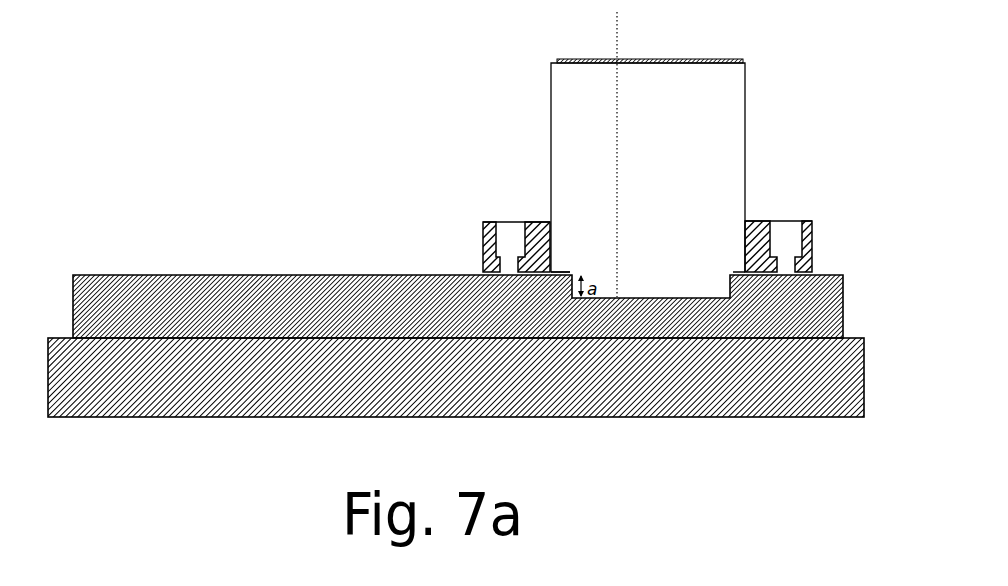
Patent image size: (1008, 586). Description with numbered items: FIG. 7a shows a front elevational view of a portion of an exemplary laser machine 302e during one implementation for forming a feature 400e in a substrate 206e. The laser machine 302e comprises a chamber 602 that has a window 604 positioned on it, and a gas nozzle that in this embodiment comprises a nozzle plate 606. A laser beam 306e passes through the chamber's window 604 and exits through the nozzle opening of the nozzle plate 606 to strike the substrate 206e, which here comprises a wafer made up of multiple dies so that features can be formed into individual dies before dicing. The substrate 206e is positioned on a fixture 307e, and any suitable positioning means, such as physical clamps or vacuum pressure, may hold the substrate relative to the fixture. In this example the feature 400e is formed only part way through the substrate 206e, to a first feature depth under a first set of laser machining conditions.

The laser machine 302e is at (380, 126).
The laser beam 306e is at (620, 41).
The window 604 is at (577, 57).
The chamber 602 is at (548, 116).
The nozzle plate 606 is at (561, 268).
The feature 400e is at (724, 299).
The substrate 206e is at (174, 320).
The fixture 307e is at (199, 395).